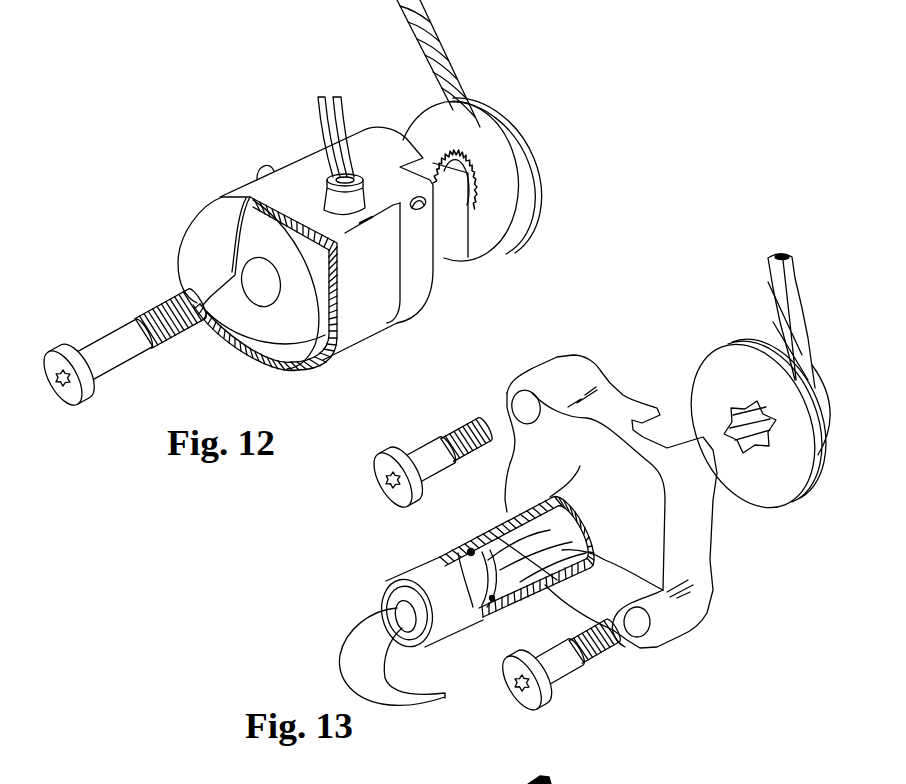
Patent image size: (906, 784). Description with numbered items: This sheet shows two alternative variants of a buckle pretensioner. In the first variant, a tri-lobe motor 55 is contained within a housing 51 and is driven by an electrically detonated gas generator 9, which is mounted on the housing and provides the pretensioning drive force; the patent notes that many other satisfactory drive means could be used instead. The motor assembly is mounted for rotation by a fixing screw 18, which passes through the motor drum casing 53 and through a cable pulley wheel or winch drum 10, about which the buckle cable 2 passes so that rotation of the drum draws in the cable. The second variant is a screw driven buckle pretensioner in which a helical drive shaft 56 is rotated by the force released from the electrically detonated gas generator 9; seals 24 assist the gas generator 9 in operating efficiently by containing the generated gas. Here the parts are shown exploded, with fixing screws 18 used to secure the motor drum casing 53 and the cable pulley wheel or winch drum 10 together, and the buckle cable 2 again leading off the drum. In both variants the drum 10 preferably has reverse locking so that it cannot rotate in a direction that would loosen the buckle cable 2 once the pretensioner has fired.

In FIG. 12, the buckle cable 2 is at (440, 42).
In FIG. 13, the buckle cable 2 is at (800, 318).
In FIG. 12, the electrically detonated gas generator 9 is at (330, 182).
In FIG. 13, the electrically detonated gas generator 9 is at (413, 580).
In FIG. 12, the cable pulley wheel or winch drum 10 is at (497, 240).
In FIG. 13, the cable pulley wheel or winch drum 10 is at (790, 467).
In FIG. 12, the fixing screw 18 is at (122, 365).
In FIG. 13, the fixing screw 18 is at (433, 470).
In FIG. 13, the seals 24 is at (472, 548).
In FIG. 12, the housing 51 is at (358, 325).
In FIG. 12, the motor drum casing 53 is at (443, 283).
In FIG. 13, the motor drum casing 53 is at (692, 613).
In FIG. 12, the tri-lobe motor 55 is at (290, 337).
In FIG. 13, the helical drive shaft 56 is at (503, 535).